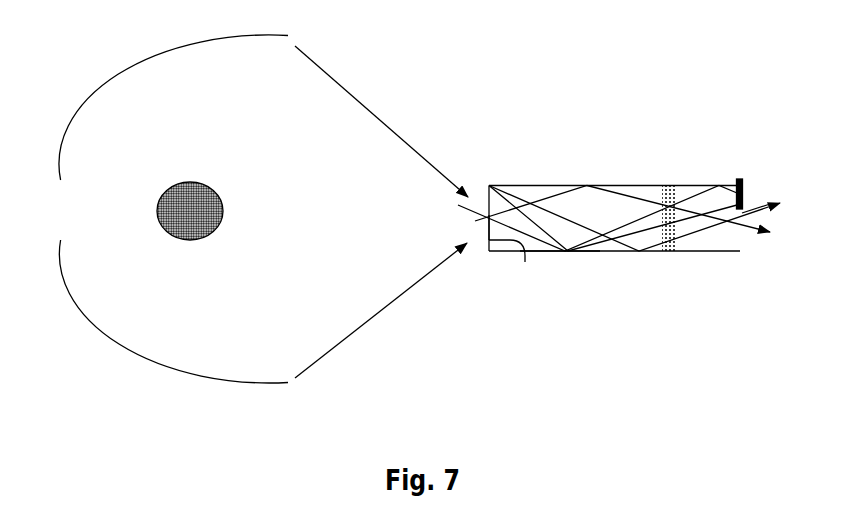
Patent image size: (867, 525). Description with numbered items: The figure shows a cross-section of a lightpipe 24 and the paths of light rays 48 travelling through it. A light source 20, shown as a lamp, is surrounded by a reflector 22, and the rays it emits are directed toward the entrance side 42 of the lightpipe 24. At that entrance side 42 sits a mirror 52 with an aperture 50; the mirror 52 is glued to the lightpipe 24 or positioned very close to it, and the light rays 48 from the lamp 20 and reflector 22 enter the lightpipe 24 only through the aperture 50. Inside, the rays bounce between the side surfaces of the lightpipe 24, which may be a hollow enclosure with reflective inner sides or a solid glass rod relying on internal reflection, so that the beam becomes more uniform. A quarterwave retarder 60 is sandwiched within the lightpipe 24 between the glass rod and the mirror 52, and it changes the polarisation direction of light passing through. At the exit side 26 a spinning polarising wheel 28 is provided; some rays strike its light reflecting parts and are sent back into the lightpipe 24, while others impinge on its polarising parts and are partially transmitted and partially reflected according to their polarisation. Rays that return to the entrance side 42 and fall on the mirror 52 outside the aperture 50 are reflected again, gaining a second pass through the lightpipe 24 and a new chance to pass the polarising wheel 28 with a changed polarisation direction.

The light source 20 is at (195, 202).
The reflector 22 is at (137, 69).
The lightpipe 24 is at (634, 186).
The exit side 26 is at (740, 169).
The polarising wheel 28 is at (743, 179).
The entrance side 42 is at (484, 173).
The light rays 48 is at (545, 247).
The aperture 50 is at (488, 228).
The mirror 52 is at (525, 262).
The quarterwave retarder 60 is at (668, 245).